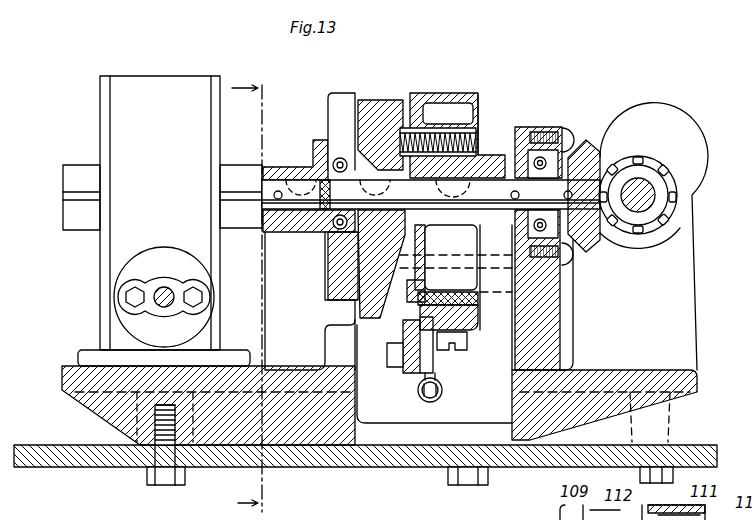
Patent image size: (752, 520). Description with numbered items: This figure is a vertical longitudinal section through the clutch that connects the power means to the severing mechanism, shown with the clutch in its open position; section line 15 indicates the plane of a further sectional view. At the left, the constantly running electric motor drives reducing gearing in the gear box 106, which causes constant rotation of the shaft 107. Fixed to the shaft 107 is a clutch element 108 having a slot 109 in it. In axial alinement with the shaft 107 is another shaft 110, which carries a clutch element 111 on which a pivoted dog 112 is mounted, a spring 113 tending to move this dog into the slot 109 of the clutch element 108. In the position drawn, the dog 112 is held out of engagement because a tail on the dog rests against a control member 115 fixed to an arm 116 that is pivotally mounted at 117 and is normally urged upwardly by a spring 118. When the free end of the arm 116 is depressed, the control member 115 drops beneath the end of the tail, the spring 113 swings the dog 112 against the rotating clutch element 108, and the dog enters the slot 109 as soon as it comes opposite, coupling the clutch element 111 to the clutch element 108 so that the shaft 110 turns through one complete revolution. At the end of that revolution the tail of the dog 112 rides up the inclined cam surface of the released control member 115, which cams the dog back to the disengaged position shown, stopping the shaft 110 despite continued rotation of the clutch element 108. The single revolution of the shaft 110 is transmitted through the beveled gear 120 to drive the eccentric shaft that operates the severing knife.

The section line 15- 15 is at (255, 294).
The gear box 106 is at (105, 106).
The shaft 107 is at (276, 188).
The clutch element 108 is at (305, 228).
The slot 109 is at (337, 102).
The shaft 110 is at (500, 185).
The clutch element 111 is at (428, 98).
The pivoted dog 112 is at (380, 101).
The spring 113 is at (443, 118).
The control member 115 is at (393, 335).
The arm 116 is at (456, 351).
The pivot 117 is at (497, 295).
The spring 118 is at (443, 393).
The beveled gear 120 is at (588, 149).